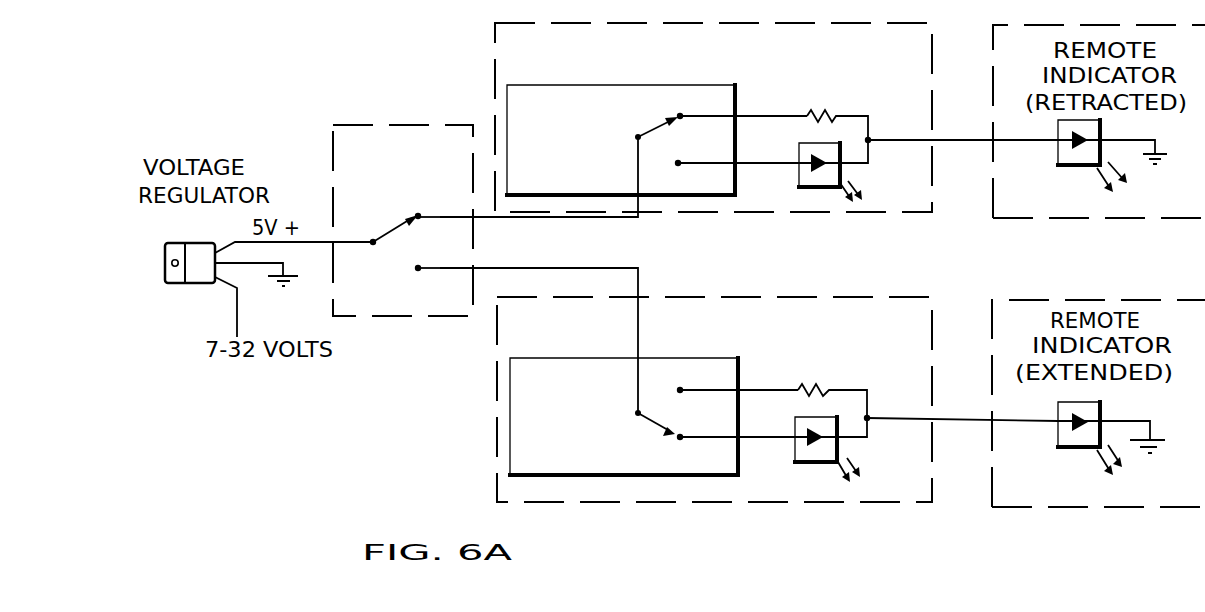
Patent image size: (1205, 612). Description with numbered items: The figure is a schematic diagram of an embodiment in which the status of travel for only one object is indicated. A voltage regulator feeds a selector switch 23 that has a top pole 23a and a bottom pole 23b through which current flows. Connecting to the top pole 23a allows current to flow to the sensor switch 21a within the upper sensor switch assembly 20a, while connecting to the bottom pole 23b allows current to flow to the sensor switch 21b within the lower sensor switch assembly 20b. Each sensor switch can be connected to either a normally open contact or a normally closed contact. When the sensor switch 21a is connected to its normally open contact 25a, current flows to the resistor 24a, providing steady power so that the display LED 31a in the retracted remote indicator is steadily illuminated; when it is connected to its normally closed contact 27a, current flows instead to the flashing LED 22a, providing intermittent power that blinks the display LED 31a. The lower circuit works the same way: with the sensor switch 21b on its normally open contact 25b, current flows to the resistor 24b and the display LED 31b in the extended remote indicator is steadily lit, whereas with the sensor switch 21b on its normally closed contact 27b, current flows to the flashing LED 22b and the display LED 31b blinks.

The sensor switch assembly (retracted) 20a is at (495, 63).
The sensor switch assembly (extended) 20b is at (497, 398).
The sensor switch 21a is at (620, 139).
The sensor switch 21b is at (623, 415).
The flashing LED 22a is at (840, 155).
The flashing LED 22b is at (837, 448).
The selector switch 23 is at (365, 125).
The top pole 23a is at (418, 218).
The bottom pole 23b is at (418, 270).
The resistor 24a is at (812, 120).
The resistor 24b is at (807, 390).
The normally open contact 25a is at (680, 117).
The normally open contact 25b is at (680, 391).
The normally closed contact 27a is at (686, 152).
The normally closed contact 27b is at (688, 424).
The display LED 31a is at (1058, 162).
The display LED 31b is at (1058, 445).